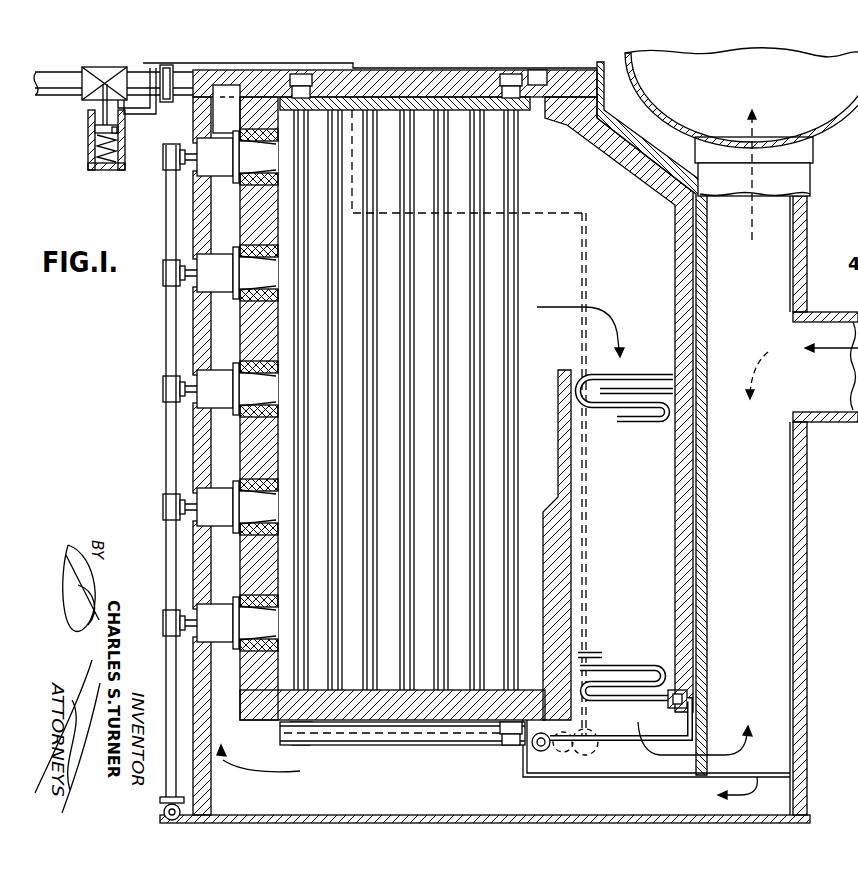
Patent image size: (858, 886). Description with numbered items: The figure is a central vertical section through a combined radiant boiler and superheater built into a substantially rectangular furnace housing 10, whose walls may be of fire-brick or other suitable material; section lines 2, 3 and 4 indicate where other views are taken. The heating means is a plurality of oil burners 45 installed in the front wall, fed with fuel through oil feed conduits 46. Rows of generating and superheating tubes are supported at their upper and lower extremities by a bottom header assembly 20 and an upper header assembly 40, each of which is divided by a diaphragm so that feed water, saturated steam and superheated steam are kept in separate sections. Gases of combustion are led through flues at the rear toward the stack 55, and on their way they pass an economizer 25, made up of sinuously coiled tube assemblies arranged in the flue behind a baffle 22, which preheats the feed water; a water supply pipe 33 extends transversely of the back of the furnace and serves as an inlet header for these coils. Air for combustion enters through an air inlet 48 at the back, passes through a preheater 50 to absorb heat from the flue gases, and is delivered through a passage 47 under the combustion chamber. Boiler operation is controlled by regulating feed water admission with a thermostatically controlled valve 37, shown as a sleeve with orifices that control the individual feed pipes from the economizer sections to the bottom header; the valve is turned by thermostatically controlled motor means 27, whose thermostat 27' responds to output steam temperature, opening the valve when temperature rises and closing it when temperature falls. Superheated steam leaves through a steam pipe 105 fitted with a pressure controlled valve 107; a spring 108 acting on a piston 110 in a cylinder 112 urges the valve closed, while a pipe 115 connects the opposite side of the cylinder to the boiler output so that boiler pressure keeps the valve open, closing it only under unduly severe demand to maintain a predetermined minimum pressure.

The housing 10 is at (257, 328).
The bottom header assembly 20 is at (507, 748).
The baffle 22 is at (557, 395).
The economizer 25 is at (625, 537).
The thermostatically controlled motor means 27 is at (475, 458).
The thermostat 27' is at (169, 95).
The water supply pipe 33 is at (686, 700).
The thermostatically controlled valve 37 is at (538, 753).
The upper header assembly 40 is at (490, 71).
The oil burners 45 is at (220, 390).
The oil feed conduits 46 is at (173, 440).
The passage 47 is at (454, 785).
The air inlet 48 is at (825, 367).
The preheater 50 is at (754, 476).
The stack 55 is at (741, 144).
The steam pipe 105 is at (185, 72).
The pressure controlled valve 107 is at (105, 69).
The spring 108 is at (88, 163).
The piston 110 is at (88, 131).
The cylinder 112 is at (126, 165).
The pipe 115 is at (141, 115).
The section line 2- 2 is at (443, 52).
The section line 3- 3 is at (138, 512).
The section line 4- 4 is at (487, 283).